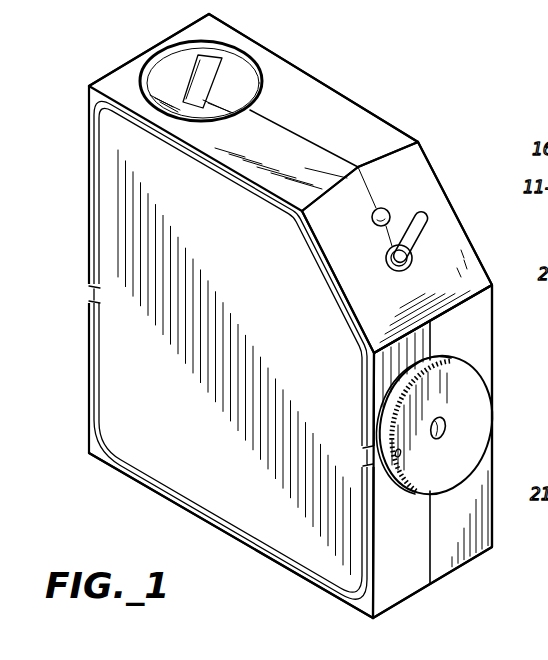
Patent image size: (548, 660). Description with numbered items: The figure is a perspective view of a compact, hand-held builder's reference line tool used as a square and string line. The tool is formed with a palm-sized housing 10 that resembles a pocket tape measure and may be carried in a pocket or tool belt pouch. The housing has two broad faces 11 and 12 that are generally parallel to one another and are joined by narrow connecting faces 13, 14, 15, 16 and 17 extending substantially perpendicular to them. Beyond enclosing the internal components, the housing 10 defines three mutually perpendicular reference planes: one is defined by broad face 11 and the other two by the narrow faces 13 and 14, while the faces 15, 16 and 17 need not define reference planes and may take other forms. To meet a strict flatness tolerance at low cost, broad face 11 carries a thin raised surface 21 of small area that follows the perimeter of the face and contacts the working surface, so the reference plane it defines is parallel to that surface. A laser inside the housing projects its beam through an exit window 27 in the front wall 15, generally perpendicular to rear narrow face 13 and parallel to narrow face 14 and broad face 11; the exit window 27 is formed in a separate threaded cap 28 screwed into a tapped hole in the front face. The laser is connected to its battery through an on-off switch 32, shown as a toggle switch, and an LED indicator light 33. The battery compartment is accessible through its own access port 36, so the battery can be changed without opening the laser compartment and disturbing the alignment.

The housing 10 is at (353, 82).
The broad face 11 is at (273, 278).
The broad face 12 is at (392, 121).
The rear narrow face 13 is at (115, 68).
The narrow face 14 is at (137, 480).
The front wall 15 is at (404, 558).
The narrow connecting face 16 is at (452, 243).
The narrow connecting face 17 is at (271, 62).
The thin raised surface 21 is at (97, 265).
The exit window 27 is at (450, 415).
The threaded cap 28 is at (428, 483).
The on-off switch 32 is at (432, 209).
The LED indicator light 33 is at (387, 209).
The access port 36 is at (187, 69).